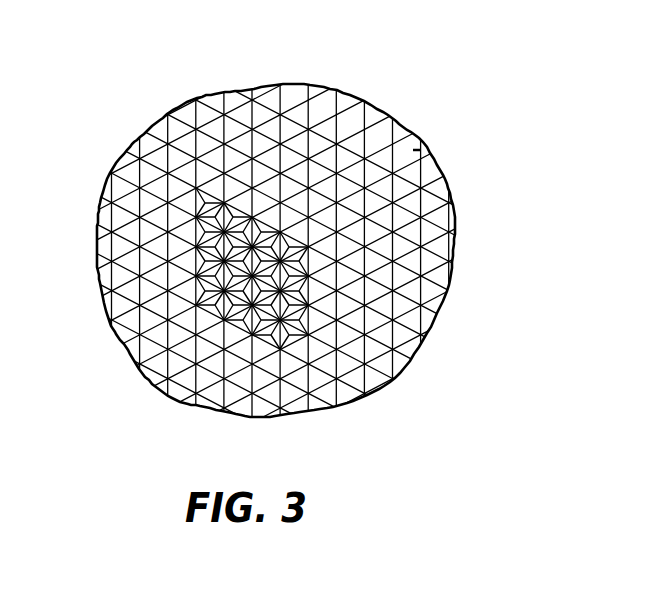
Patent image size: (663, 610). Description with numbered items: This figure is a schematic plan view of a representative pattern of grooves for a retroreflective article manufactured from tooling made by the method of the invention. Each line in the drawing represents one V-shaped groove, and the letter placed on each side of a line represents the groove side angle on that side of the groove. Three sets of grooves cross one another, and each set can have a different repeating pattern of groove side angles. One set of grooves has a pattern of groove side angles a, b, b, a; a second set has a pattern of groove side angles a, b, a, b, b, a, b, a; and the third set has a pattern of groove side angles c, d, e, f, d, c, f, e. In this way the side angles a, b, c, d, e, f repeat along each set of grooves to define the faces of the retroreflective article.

The groove side angle a is at (95, 329).
The groove side angle b is at (451, 321).
The groove side angle c is at (364, 424).
The groove side angle d is at (421, 372).
The groove side angle e is at (392, 408).
The groove side angle f is at (336, 434).